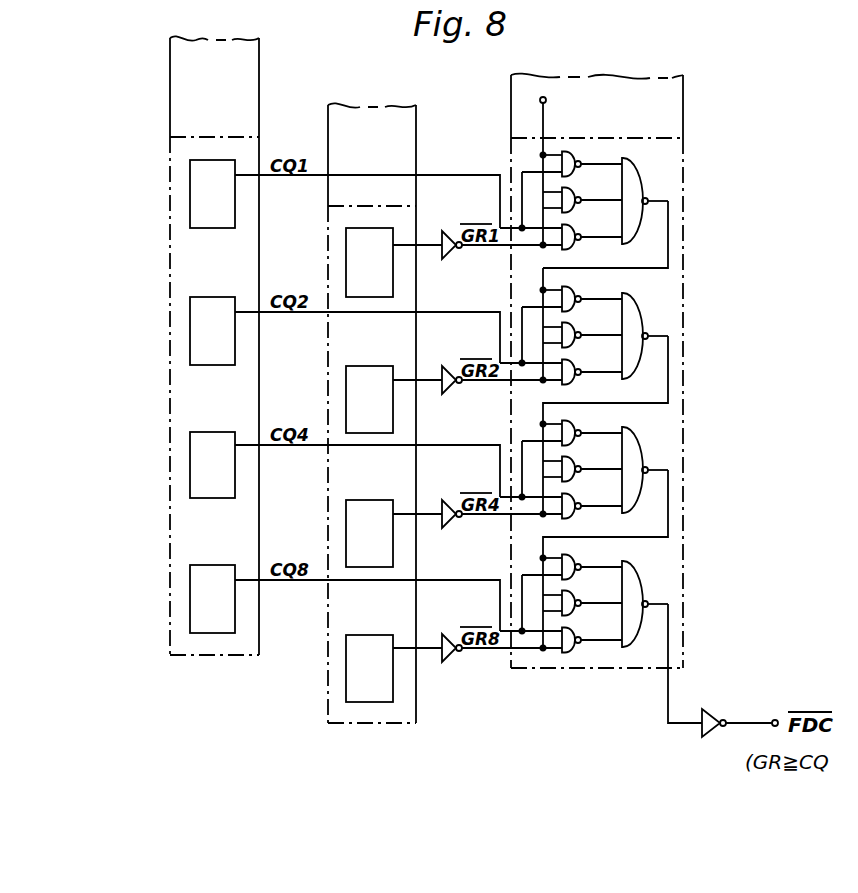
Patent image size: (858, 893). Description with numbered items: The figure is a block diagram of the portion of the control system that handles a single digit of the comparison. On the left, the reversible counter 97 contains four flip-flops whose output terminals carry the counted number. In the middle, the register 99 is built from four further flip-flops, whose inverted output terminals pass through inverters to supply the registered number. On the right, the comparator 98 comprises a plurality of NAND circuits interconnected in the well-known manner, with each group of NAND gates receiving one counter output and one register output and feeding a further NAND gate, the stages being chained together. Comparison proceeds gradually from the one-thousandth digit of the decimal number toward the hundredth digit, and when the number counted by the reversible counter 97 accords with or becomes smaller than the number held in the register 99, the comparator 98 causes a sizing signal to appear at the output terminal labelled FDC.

The reversible counter 97 is at (259, 118).
The comparator 98 is at (683, 118).
The register 99 is at (416, 118).